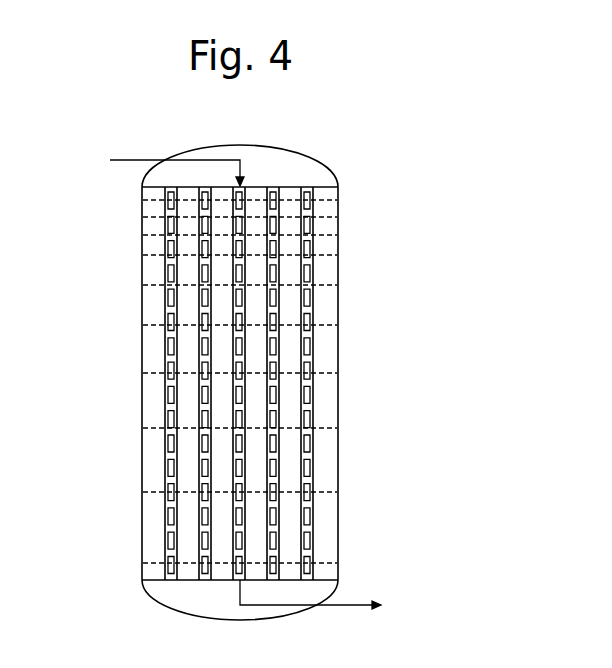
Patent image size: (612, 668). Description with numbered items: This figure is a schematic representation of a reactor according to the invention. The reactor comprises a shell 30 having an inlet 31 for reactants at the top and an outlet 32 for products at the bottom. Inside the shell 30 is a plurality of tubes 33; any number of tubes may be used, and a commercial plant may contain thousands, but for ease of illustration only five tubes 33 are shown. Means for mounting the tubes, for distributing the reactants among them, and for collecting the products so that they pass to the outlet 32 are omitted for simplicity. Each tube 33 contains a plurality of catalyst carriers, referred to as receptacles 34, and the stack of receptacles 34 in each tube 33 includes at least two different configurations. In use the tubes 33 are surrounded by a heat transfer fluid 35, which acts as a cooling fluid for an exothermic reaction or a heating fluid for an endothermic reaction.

The shell 30 is at (331, 162).
The inlet 31 is at (126, 160).
The outlet 32 is at (356, 605).
The tubes 33 is at (167, 310).
The receptacles 34 is at (313, 390).
The heat transfer fluid 35 is at (150, 443).